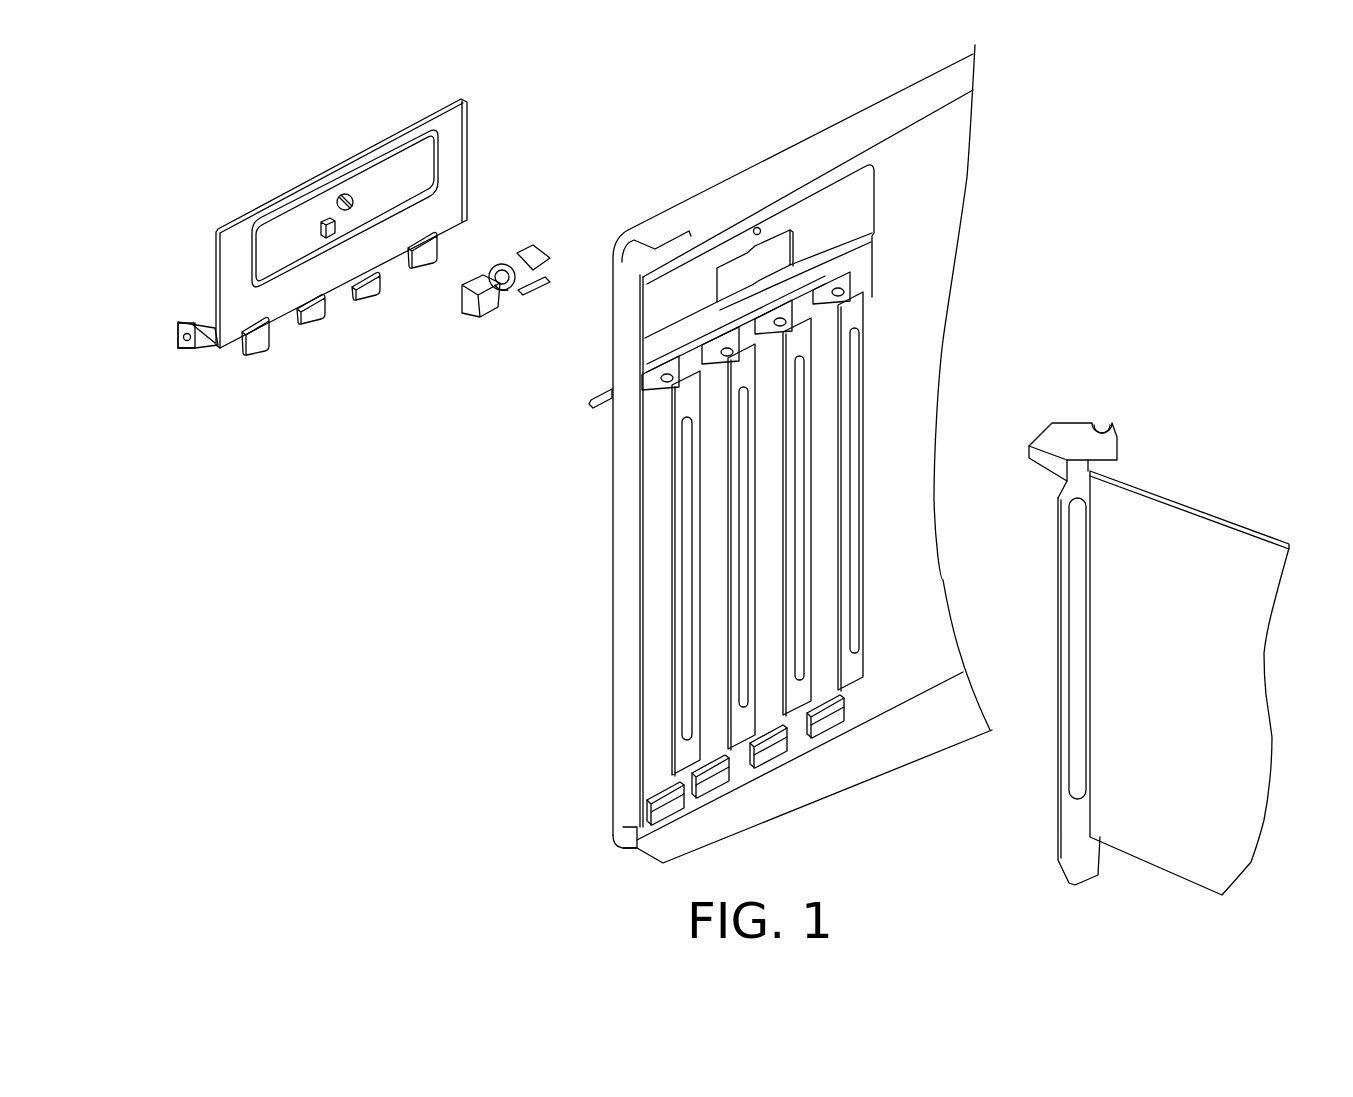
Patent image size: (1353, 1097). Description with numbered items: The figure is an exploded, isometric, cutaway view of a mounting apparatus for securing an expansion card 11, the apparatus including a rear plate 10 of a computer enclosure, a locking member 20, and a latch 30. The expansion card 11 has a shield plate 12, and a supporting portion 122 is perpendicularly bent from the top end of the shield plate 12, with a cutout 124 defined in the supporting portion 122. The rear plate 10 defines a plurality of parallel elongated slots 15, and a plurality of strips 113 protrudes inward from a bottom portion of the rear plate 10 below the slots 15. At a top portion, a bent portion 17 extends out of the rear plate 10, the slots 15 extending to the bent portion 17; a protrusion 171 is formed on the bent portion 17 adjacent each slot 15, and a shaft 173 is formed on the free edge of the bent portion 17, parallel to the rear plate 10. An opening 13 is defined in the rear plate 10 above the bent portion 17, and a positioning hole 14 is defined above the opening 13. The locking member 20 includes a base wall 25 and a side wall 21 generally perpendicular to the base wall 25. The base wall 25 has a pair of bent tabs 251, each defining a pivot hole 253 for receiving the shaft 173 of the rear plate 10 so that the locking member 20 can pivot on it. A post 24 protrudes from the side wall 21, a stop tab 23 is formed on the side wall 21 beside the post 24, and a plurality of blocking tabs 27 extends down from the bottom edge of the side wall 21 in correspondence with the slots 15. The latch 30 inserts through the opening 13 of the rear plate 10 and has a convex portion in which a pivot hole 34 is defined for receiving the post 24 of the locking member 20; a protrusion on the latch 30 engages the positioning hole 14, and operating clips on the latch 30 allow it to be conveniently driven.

The rear plate 10 is at (796, 454).
The expansion card 11 is at (1152, 631).
The shield plate 12 is at (1065, 626).
The supporting portion 122 is at (1074, 424).
The cutout 124 is at (1102, 433).
The opening 13 is at (778, 255).
The positioning hole 14 is at (757, 227).
The elongated slots 15 is at (653, 643).
The bent portion 17 is at (679, 380).
The protrusion 171 is at (660, 384).
The shaft 173 is at (590, 410).
The strips 113 is at (653, 800).
The locking member 20 is at (281, 231).
The side wall 21 is at (453, 118).
The stop tab 23 is at (332, 240).
The post 24 is at (342, 195).
The base wall 25 is at (158, 335).
The bent tabs 251 is at (158, 353).
The pivot hole 253 is at (187, 344).
The blocking tabs 27 is at (257, 342).
The latch 30 is at (528, 290).
The pivot hole 34 is at (512, 273).